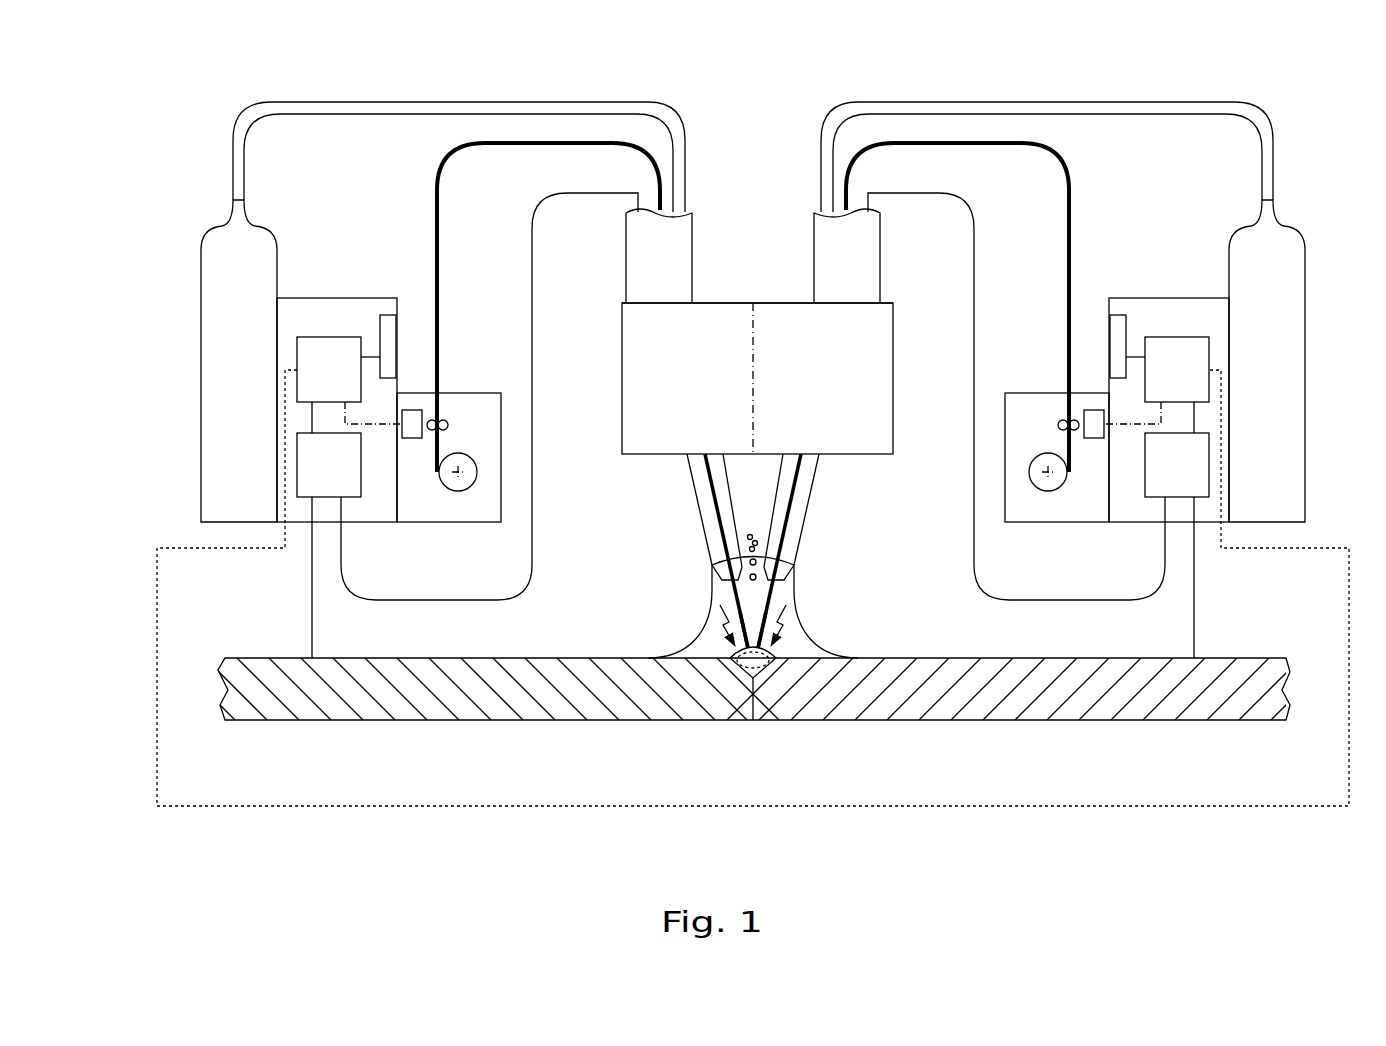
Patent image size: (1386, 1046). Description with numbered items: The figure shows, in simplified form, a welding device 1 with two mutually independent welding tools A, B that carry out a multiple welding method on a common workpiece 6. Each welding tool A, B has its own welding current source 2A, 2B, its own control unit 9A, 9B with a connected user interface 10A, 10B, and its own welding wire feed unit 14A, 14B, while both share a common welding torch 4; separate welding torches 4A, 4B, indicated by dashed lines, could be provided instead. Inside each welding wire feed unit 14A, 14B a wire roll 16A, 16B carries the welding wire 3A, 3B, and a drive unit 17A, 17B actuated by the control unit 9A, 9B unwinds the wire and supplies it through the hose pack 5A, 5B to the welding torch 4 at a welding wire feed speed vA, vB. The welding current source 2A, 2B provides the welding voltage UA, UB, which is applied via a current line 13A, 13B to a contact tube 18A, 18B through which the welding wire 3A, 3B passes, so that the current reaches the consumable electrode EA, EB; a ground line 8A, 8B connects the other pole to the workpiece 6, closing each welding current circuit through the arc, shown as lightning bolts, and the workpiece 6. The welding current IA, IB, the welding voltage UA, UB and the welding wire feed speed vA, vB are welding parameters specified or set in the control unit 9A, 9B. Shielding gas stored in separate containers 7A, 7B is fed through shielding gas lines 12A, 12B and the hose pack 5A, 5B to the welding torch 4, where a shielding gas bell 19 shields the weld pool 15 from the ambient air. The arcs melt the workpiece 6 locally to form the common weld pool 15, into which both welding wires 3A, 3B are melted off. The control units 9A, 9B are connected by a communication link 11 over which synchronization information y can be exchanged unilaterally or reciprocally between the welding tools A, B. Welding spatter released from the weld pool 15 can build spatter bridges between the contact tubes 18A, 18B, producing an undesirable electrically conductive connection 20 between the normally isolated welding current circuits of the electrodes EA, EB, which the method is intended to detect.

The welding device 1 is at (749, 150).
The welding current source 2A is at (312, 475).
The welding current source 2B is at (1157, 475).
The welding wire 3A is at (723, 562).
The welding wire 3B is at (783, 562).
The welding torch 4 is at (762, 398).
The welding torch 4A is at (665, 398).
The welding torch 4B is at (888, 398).
The hose pack 5A is at (659, 256).
The hose pack 5B is at (847, 256).
The workpiece 6 is at (487, 690).
The container 7A is at (257, 365).
The container 7B is at (1293, 365).
The ground line 8A is at (311, 637).
The ground line 8B is at (1195, 637).
The control unit 9A is at (312, 380).
The control unit 9B is at (1157, 380).
The user interface 10A is at (379, 338).
The user interface 10B is at (1127, 338).
The communication link 11 is at (247, 806).
The shielding gas line 12A is at (236, 127).
The shielding gas line 12B is at (1270, 125).
The current line 13A is at (531, 258).
The current line 13B is at (977, 258).
The welding wire feed unit 14A is at (463, 508).
The welding wire feed unit 14B is at (1040, 500).
The weld pool 15 is at (741, 684).
The wire roll 16A is at (464, 458).
The wire roll 16B is at (1042, 458).
The drive unit 17A is at (412, 410).
The drive unit 17B is at (1094, 410).
The contact tube 18A is at (700, 467).
The contact tube 18B is at (805, 467).
The shielding gas bell 19 is at (810, 644).
The electrically conductive connection 20 is at (752, 522).
The welding tool A is at (318, 282).
The welding tool B is at (1192, 282).
The electrode EA is at (744, 630).
The electrode EB is at (762, 630).
The welding wire feed speed vA is at (706, 487).
The welding wire feed speed vB is at (800, 487).
The welding current IA is at (300, 548).
The welding current IB is at (1206, 548).
The welding voltage UA is at (318, 535).
The welding voltage UB is at (1188, 535).
The synchronization information y is at (766, 853).